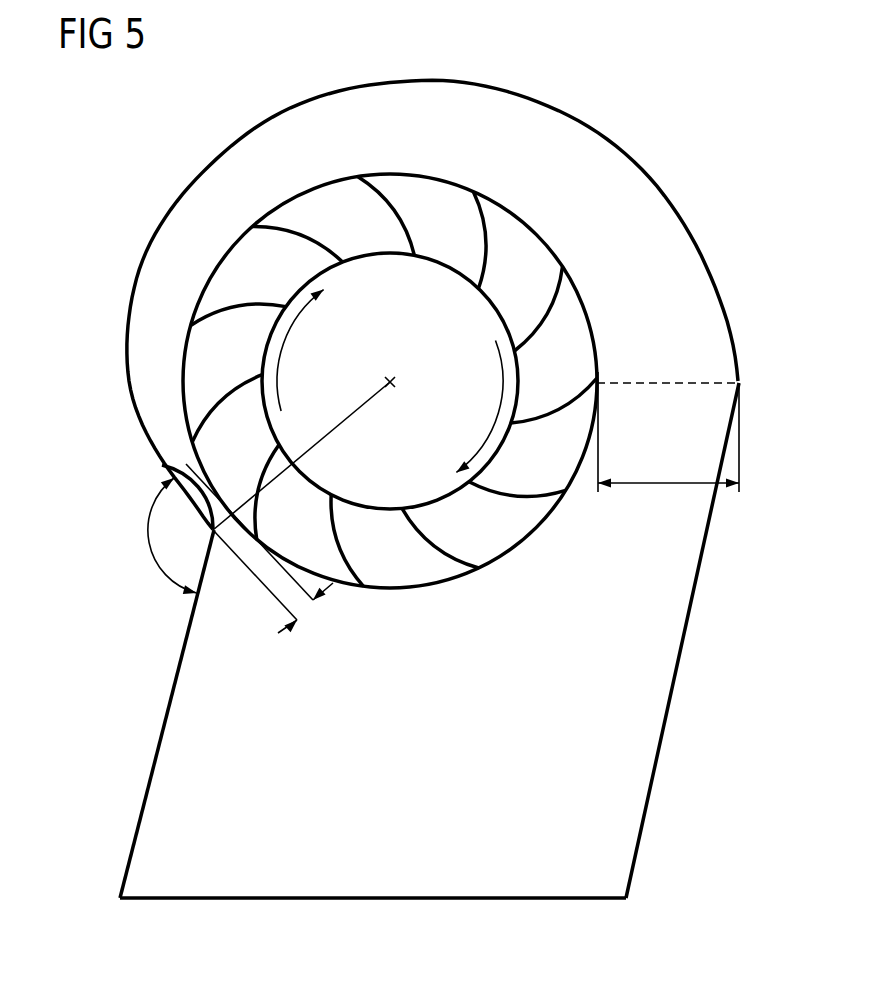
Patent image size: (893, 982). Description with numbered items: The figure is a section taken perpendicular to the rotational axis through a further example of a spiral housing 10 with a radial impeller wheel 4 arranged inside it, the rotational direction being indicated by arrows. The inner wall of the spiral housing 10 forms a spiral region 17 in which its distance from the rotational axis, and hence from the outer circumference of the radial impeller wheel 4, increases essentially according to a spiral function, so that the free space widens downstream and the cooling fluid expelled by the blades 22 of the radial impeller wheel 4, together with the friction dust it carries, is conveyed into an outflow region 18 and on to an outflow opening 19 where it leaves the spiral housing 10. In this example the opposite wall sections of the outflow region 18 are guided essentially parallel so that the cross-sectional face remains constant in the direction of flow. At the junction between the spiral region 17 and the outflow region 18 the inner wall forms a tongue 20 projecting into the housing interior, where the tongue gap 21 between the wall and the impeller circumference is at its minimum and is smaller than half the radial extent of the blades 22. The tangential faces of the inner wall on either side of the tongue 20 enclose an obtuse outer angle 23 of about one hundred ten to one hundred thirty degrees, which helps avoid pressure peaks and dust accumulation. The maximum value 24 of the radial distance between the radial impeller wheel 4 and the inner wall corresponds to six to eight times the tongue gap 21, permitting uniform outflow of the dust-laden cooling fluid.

The radial impeller wheel 4 is at (425, 319).
The spiral housing 10 is at (407, 480).
The spiral region 17 is at (402, 81).
The outflow region 18 is at (143, 803).
The outflow opening 19 is at (500, 884).
The tongue 20 is at (161, 465).
The tongue gap 21 is at (308, 613).
The blades 22 is at (488, 230).
The outer angle 23 is at (213, 272).
The maximum value 24 is at (660, 483).